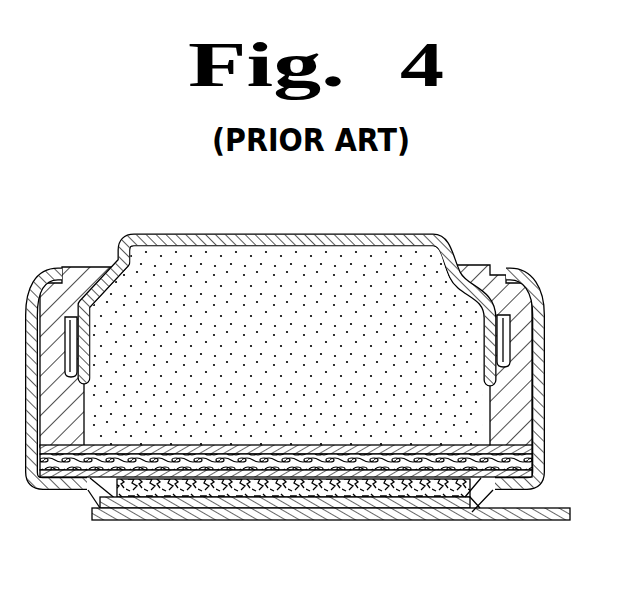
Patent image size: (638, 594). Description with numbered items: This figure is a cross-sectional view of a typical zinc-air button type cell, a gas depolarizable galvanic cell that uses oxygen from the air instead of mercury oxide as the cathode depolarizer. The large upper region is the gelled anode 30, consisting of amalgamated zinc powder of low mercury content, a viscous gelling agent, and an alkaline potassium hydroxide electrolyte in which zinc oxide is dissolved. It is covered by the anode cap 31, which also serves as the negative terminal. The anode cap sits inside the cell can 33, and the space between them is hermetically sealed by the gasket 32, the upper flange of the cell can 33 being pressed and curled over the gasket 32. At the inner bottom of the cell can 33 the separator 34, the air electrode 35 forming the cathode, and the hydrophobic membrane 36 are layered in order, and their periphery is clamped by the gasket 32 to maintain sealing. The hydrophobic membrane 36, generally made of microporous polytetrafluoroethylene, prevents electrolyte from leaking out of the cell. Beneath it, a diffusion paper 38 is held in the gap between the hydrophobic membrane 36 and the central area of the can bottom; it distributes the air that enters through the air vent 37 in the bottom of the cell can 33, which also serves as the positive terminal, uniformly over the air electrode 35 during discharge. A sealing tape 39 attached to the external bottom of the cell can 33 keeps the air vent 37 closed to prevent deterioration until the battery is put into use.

The gelled anode 30 is at (298, 268).
The anode cap 31 is at (397, 240).
The gasket 32 is at (520, 303).
The cell can 33 is at (538, 357).
The separator 34 is at (535, 450).
The air electrode 35 is at (532, 463).
The hydrophobic membrane 36 is at (471, 512).
The air vent 37 is at (407, 503).
The diffusion paper 38 is at (310, 494).
The sealing tape 39 is at (262, 519).